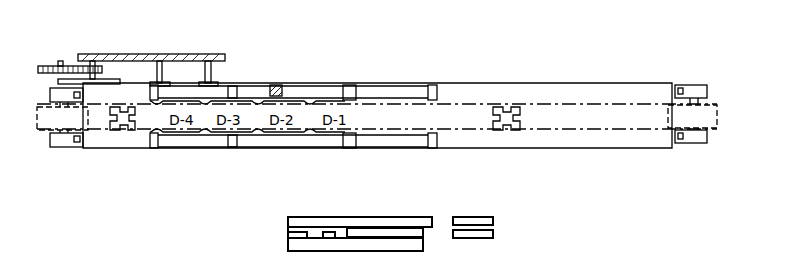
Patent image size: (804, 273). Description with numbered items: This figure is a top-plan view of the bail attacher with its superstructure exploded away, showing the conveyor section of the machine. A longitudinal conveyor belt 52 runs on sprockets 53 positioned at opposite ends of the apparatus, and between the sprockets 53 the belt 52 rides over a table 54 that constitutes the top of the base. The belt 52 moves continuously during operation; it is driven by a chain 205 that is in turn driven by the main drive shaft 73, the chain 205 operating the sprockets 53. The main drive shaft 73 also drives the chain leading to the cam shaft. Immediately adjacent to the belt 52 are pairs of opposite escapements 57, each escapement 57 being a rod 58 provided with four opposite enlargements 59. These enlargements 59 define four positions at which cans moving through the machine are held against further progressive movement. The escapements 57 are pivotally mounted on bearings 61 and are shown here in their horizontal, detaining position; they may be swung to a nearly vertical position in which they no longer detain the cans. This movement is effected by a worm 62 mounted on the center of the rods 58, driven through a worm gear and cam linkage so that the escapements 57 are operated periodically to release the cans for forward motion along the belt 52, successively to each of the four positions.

The chain 205 is at (171, 54).
The main drive shaft 73 is at (212, 70).
The escapement 57 is at (258, 98).
The worm 62 is at (280, 87).
The conveyor belt 52 is at (330, 100).
The rod 58 is at (377, 95).
The bearing 61 is at (437, 88).
The table 54 is at (488, 95).
The sprocket 53 is at (70, 117).
The enlargement 59 is at (163, 137).